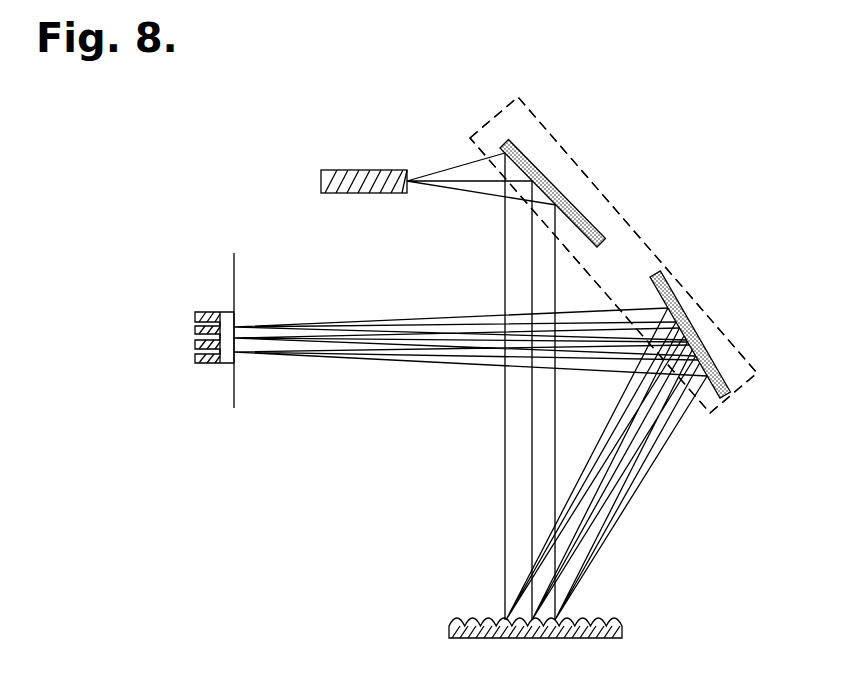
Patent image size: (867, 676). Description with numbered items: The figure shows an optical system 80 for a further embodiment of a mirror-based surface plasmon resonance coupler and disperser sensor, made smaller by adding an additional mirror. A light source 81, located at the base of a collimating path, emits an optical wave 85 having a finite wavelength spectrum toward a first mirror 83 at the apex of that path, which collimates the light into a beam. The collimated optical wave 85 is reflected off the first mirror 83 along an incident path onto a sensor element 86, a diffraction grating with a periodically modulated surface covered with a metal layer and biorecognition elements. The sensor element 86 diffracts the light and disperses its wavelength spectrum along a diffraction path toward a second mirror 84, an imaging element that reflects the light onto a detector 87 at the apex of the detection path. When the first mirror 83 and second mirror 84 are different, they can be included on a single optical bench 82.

The optical system 80 is at (160, 102).
The light source 81 is at (320, 181).
The optical bench 82 is at (543, 120).
The first mirror 83 is at (588, 217).
The second mirror 84 is at (670, 290).
The optical wave 85 is at (505, 470).
The sensor element 86 is at (447, 628).
The detector 87 is at (195, 332).